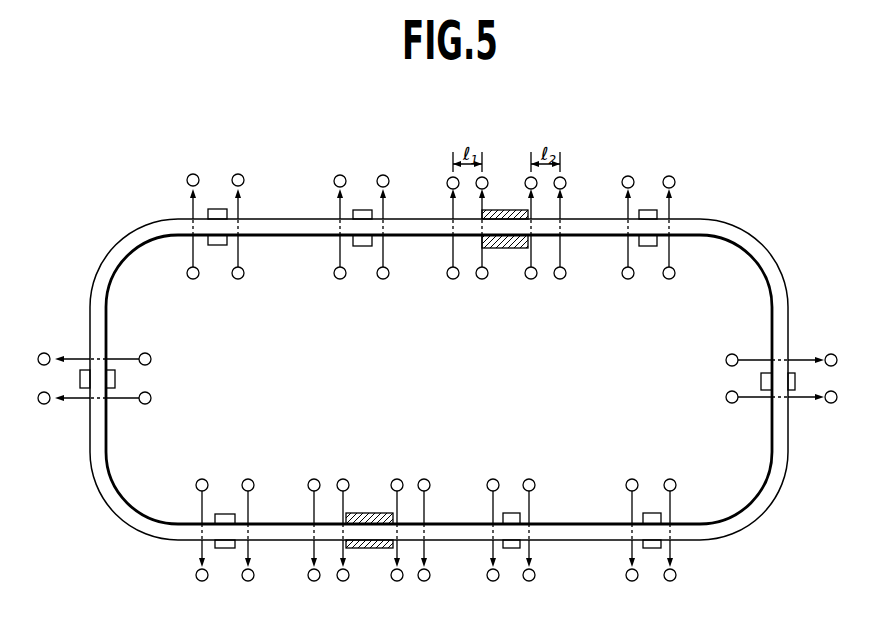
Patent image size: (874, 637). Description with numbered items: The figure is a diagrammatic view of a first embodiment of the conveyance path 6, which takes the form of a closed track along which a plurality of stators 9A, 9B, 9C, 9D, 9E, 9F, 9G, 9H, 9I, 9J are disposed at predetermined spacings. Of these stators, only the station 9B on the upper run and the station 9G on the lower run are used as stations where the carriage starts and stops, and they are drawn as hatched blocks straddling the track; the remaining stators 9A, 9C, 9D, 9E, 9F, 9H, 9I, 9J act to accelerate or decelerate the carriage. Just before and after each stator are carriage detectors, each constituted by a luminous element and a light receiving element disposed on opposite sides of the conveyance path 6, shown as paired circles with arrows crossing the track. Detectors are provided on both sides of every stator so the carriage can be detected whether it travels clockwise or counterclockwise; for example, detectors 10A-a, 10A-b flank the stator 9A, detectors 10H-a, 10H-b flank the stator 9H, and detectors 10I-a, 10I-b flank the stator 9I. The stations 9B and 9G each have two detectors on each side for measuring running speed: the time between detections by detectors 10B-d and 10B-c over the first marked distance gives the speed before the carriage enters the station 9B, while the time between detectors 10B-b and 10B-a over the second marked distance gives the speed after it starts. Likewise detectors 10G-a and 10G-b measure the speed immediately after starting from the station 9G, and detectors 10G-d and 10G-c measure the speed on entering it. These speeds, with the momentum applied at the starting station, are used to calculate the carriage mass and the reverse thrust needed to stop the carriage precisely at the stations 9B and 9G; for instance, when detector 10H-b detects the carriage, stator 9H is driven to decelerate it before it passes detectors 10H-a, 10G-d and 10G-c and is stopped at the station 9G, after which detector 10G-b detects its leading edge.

The conveyance path 6 is at (750, 252).
The stator 9A is at (648, 210).
The station 9B is at (500, 210).
The stator 9C is at (362, 210).
The stator 9D is at (218, 208).
The stator 9E is at (115, 376).
The stator 9F is at (225, 549).
The station 9G is at (372, 549).
The stator 9H is at (512, 549).
The stator 9I is at (652, 549).
The stator 9J is at (795, 378).
The carriage detector 10A-a is at (669, 279).
The carriage detector 10A-b is at (628, 279).
The carriage detector 10B-a is at (560, 279).
The carriage detector 10B-b is at (531, 279).
The carriage detector 10B-c is at (482, 279).
The carriage detector 10B-d is at (453, 279).
The carriage detector 10G-a is at (314, 479).
The carriage detector 10G-b is at (343, 479).
The carriage detector 10G-c is at (397, 479).
The carriage detector 10G-d is at (424, 479).
The carriage detector 10H-a is at (493, 479).
The carriage detector 10H-b is at (529, 479).
The carriage detector 10I-a is at (632, 479).
The carriage detector 10I-b is at (670, 479).